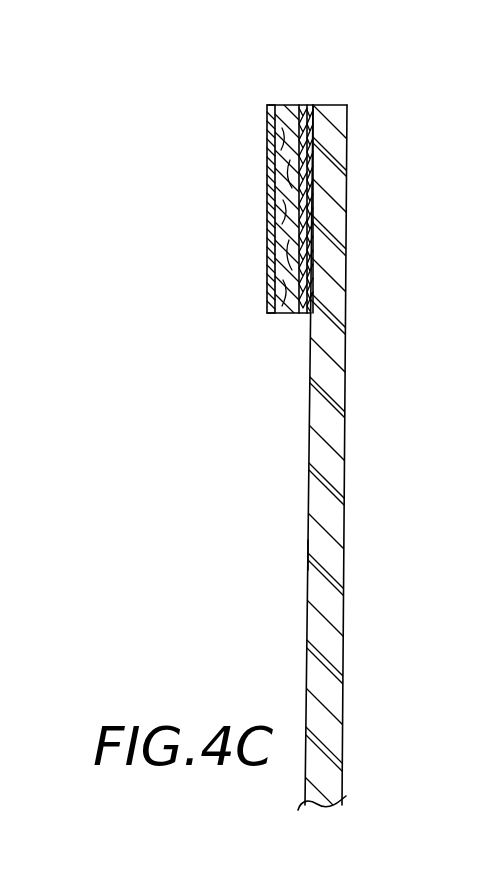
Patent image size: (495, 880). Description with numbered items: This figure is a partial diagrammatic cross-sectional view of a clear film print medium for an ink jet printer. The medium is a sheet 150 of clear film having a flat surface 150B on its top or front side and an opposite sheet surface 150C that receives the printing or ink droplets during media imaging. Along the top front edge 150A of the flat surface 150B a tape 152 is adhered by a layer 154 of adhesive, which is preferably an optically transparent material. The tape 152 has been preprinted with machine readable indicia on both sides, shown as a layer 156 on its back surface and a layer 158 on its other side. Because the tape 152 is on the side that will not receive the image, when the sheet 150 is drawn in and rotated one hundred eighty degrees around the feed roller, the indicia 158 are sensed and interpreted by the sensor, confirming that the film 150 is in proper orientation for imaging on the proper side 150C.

The sheet of clear film 150 is at (330, 608).
The top front edge 150A is at (344, 112).
The flat surface 150B is at (309, 556).
The sheet surface 150C is at (347, 316).
The tape 152 is at (287, 104).
The layer of adhesive 154 is at (310, 105).
The layer of machine readable indicia 156 is at (274, 105).
The layer of indicia 158 is at (298, 105).